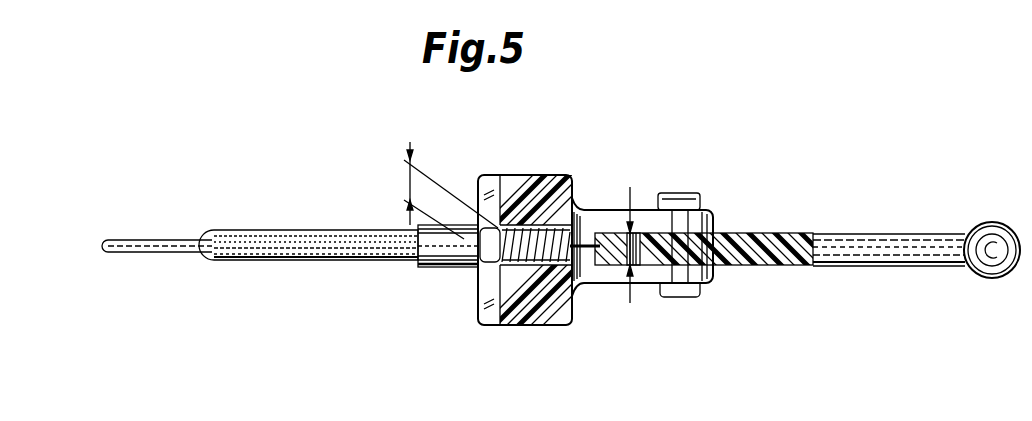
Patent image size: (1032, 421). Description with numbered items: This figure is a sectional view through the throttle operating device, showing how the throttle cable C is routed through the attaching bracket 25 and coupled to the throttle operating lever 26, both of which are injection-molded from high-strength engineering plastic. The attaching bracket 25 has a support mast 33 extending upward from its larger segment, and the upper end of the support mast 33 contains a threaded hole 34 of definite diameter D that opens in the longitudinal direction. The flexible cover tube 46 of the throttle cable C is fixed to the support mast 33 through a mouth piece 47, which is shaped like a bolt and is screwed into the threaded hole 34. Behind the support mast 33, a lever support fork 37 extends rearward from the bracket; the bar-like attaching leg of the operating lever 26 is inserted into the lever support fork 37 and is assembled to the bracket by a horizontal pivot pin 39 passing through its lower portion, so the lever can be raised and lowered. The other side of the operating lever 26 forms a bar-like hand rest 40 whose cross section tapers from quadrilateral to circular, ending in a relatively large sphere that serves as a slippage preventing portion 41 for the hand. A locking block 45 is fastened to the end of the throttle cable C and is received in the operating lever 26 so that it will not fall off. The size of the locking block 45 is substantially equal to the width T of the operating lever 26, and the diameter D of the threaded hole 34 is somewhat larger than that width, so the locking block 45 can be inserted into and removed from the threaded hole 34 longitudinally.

The throttle cable C is at (160, 252).
The flexible cover tube 46 is at (317, 232).
The mouth piece 47 is at (443, 268).
The attaching bracket 25 is at (548, 257).
The support mast 33 is at (515, 178).
The threaded hole 34 is at (538, 232).
The lever support fork 37 is at (714, 222).
The horizontal pivot pin 39 is at (688, 193).
The hand rest 40 is at (776, 266).
The locking block 45 is at (628, 243).
The throttle operating lever 26 is at (795, 235).
The slippage preventing portion 41 is at (993, 227).
The diameter of threaded hole D is at (441, 190).
The width of operating lever T is at (615, 262).